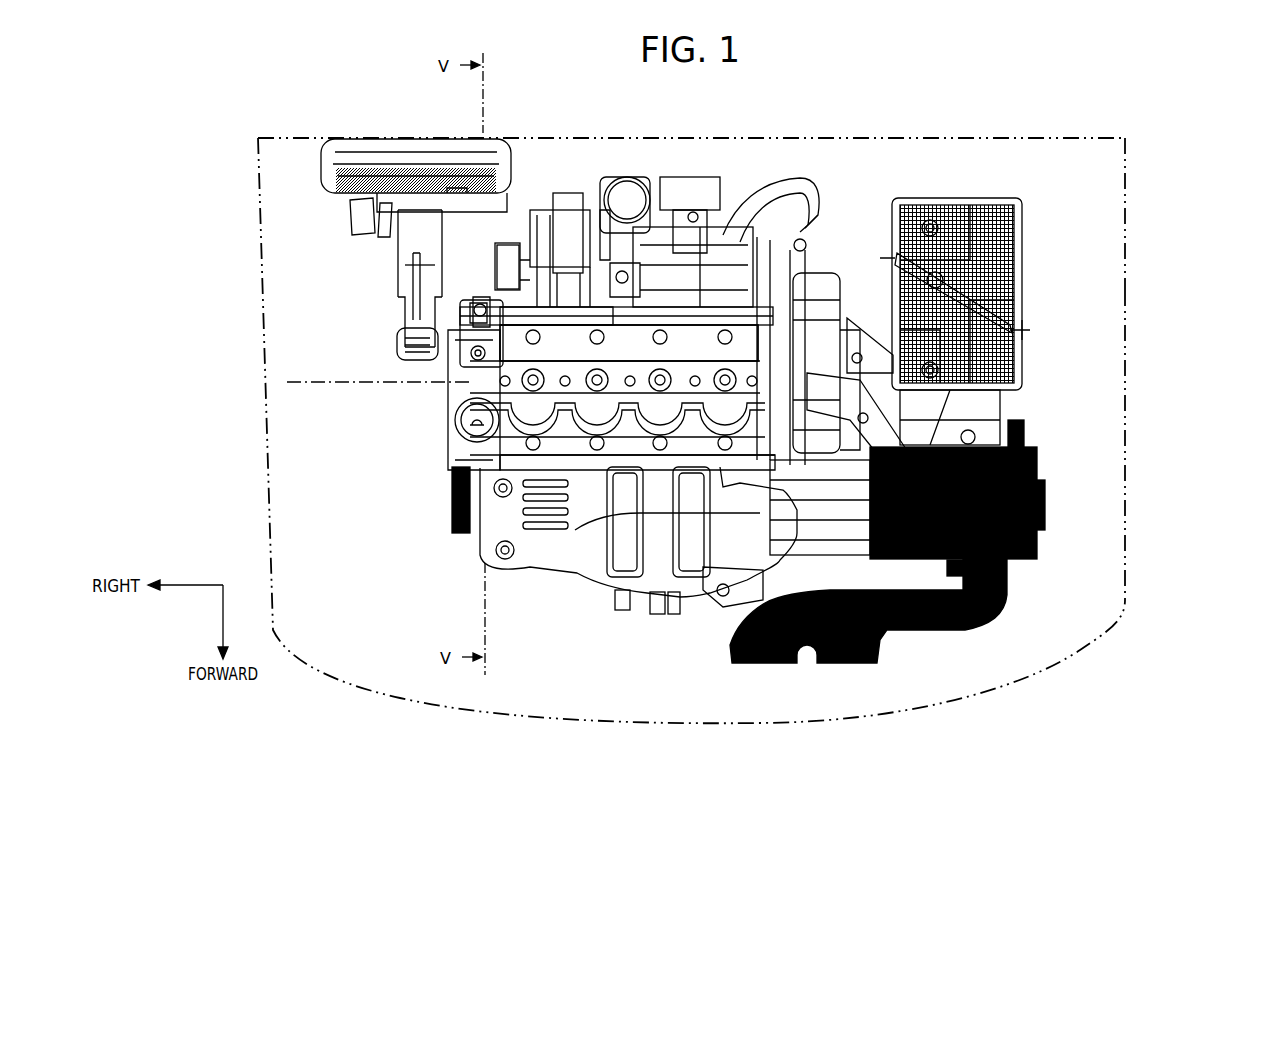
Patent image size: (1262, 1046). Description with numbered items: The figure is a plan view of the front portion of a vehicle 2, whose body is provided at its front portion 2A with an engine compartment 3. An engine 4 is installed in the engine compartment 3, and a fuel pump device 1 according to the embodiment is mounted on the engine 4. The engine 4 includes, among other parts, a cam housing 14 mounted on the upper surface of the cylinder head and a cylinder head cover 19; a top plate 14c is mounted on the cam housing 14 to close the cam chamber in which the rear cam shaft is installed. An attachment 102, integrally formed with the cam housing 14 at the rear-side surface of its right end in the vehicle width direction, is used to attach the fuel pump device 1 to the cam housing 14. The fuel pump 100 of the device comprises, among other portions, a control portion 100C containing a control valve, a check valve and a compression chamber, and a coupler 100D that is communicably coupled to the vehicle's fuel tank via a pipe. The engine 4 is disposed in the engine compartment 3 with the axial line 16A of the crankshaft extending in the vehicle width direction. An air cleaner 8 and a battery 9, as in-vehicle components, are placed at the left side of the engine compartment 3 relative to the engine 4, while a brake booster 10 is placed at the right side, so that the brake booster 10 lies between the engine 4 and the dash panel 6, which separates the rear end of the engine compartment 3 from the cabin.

The fuel pump device 1 is at (452, 362).
The vehicle 2 is at (1157, 154).
The front portion 2A is at (1128, 268).
The engine compartment 3 is at (1090, 390).
The engine 4 is at (830, 261).
The dash panel 6 is at (950, 137).
The air cleaner 8 is at (1037, 497).
The battery 9 is at (985, 240).
The brake booster 10 is at (347, 197).
The cam housing 14 is at (556, 350).
The top plate 14c is at (550, 230).
The axial line 16A is at (346, 384).
The cylinder head cover 19 is at (637, 430).
The fuel pump 100 is at (452, 345).
The control portion 100C is at (397, 330).
The coupler 100D is at (505, 253).
The attachment 102 is at (460, 382).